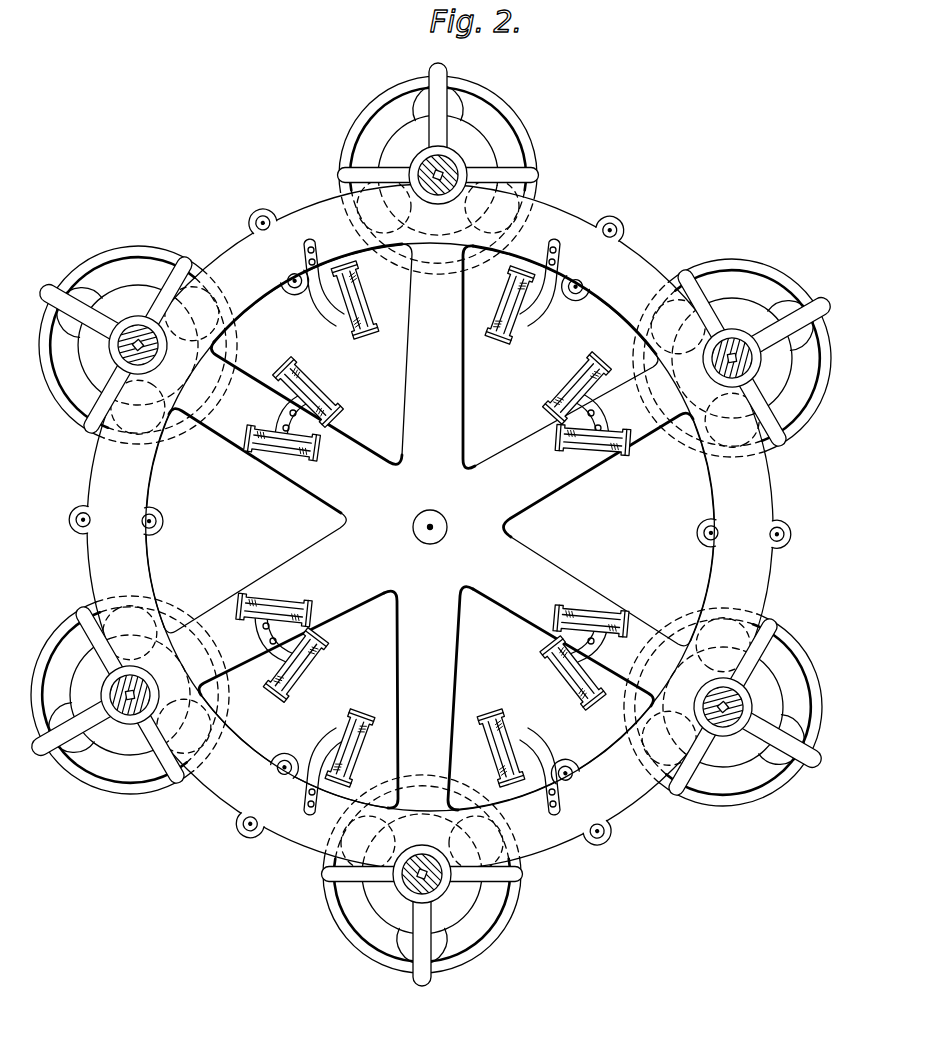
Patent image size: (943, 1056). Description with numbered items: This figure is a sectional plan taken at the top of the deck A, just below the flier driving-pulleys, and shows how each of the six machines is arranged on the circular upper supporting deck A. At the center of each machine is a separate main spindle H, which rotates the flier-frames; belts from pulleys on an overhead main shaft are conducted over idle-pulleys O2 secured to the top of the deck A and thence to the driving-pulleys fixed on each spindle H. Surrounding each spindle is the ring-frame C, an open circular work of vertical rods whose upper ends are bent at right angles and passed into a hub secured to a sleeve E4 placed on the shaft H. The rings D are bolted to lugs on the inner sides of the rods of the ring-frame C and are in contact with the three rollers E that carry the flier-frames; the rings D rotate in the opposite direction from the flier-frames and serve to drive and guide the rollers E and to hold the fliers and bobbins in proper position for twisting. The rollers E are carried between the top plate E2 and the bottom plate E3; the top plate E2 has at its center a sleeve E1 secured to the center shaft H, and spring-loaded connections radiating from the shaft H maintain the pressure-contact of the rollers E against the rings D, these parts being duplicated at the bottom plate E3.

The deck A is at (625, 274).
The ring-frame C is at (350, 172).
The rings D is at (367, 112).
The rollers E is at (85, 746).
The sleeve E1 is at (783, 287).
The top plate E2 is at (470, 894).
The bottom plate E3 is at (402, 147).
The sleeve E4 is at (440, 186).
The main spindle H is at (452, 171).
The idle-pulleys O2 is at (345, 305).